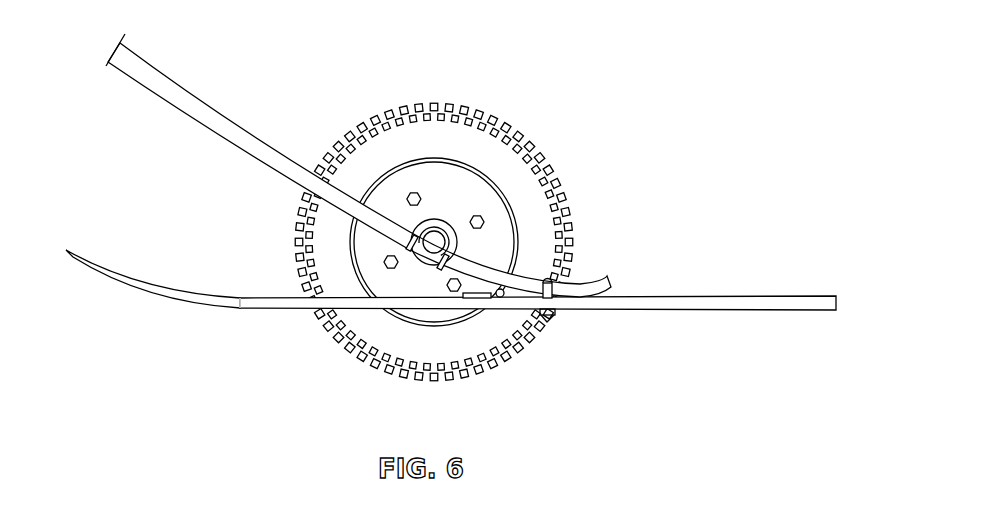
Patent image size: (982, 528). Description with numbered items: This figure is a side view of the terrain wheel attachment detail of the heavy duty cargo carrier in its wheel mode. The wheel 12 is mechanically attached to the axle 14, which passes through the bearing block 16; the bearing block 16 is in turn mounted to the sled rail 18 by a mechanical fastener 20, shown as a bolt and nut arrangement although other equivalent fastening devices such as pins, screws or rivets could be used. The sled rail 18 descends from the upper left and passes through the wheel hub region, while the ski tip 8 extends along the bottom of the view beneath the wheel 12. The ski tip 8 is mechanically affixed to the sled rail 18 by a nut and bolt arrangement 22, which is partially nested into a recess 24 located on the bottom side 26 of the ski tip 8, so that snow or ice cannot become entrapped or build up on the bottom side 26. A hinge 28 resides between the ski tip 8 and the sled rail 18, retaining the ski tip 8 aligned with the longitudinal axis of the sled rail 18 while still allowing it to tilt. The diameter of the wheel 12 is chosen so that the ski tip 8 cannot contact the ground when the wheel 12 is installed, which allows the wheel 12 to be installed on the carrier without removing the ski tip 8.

The ski tip 8 is at (97, 265).
The wheel 12 is at (537, 143).
The axle 14 is at (450, 219).
The bearing block 16 is at (458, 248).
The sled rail 18 is at (211, 108).
The mechanical fastener 20 is at (412, 237).
The nut and bolt arrangement 22 is at (547, 280).
The recess 24 is at (555, 308).
The bottom side 26 is at (247, 308).
The hinge 28 is at (468, 296).